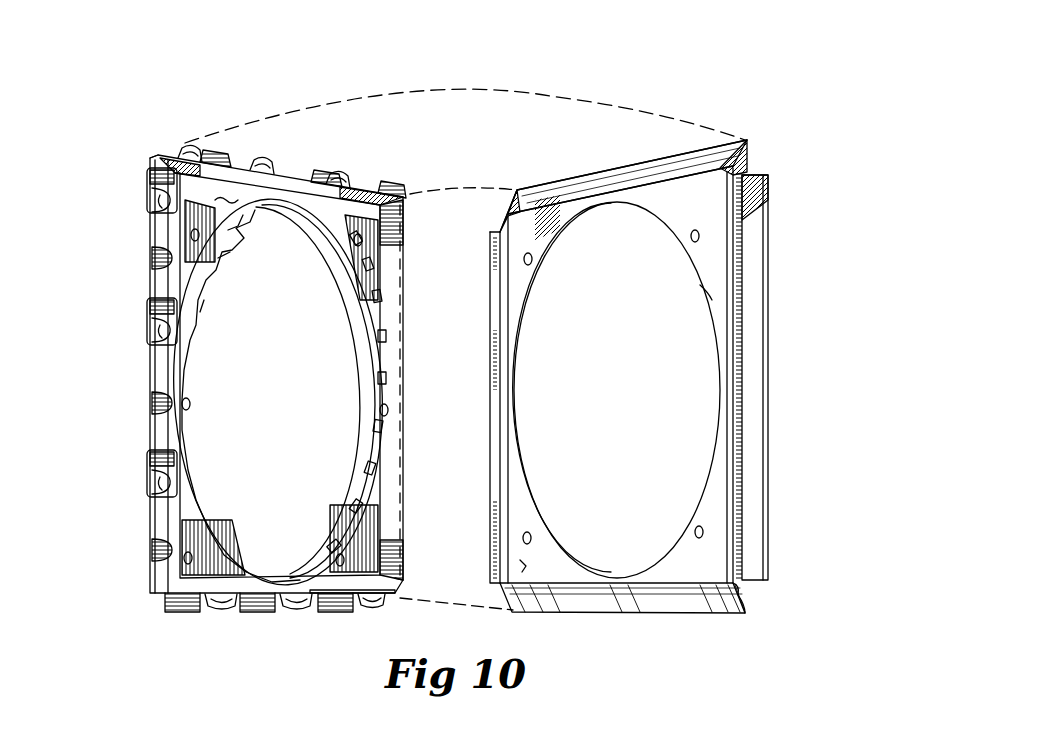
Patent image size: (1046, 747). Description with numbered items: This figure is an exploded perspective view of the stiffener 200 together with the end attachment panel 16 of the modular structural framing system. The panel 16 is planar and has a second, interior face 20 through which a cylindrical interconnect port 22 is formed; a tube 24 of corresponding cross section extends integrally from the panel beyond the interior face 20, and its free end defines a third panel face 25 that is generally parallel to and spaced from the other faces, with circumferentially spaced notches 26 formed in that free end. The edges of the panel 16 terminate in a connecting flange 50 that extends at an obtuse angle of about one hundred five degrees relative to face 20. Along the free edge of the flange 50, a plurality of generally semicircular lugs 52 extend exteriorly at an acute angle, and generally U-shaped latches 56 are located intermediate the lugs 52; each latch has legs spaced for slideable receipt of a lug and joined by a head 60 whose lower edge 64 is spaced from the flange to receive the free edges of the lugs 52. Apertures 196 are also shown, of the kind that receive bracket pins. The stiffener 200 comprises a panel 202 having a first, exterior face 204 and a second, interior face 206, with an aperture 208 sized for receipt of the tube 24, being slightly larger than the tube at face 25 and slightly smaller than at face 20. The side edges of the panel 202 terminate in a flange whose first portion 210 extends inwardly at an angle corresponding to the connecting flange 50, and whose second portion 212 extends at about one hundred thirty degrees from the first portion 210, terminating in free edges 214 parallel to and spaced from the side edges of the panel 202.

The attachment panel 16 is at (150, 140).
The second, interior face 20 is at (240, 208).
The interconnect port 22 is at (335, 360).
The tube 24 is at (372, 280).
The third panel face 25 is at (186, 404).
The notches 26 is at (210, 302).
The connecting flange 50 is at (150, 583).
The lugs 52 is at (190, 156).
The latches 56 is at (213, 145).
The head 60 is at (150, 198).
The lower edge 64 is at (160, 203).
The apertures 196 is at (200, 236).
The stiffener 200 is at (790, 185).
The panel 202 is at (518, 565).
The first, exterior face 204 is at (548, 292).
The second, interior face 206 is at (678, 210).
The aperture 208 is at (708, 295).
The first portion 210 is at (645, 180).
The second portion 212 is at (745, 150).
The free edges 214 is at (745, 140).